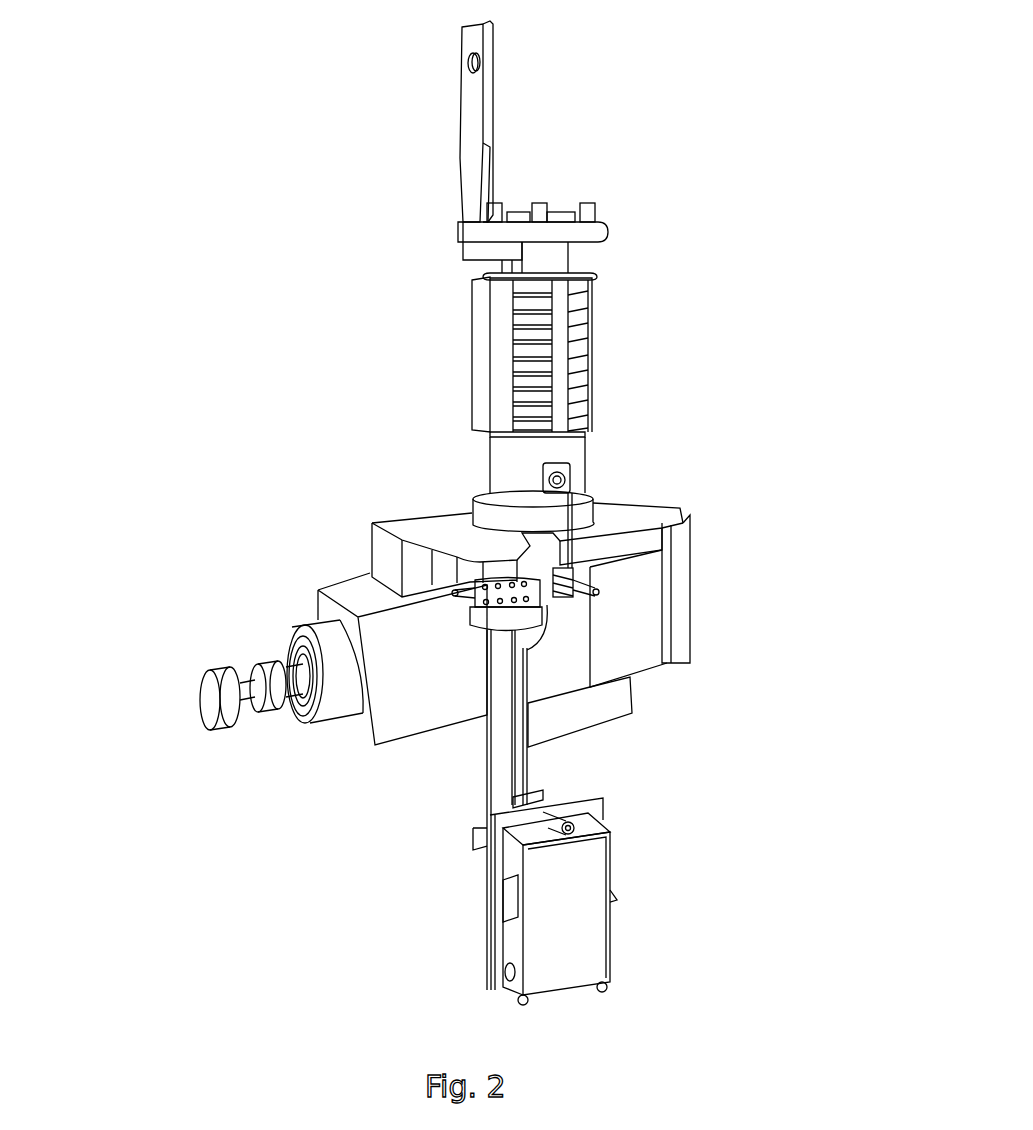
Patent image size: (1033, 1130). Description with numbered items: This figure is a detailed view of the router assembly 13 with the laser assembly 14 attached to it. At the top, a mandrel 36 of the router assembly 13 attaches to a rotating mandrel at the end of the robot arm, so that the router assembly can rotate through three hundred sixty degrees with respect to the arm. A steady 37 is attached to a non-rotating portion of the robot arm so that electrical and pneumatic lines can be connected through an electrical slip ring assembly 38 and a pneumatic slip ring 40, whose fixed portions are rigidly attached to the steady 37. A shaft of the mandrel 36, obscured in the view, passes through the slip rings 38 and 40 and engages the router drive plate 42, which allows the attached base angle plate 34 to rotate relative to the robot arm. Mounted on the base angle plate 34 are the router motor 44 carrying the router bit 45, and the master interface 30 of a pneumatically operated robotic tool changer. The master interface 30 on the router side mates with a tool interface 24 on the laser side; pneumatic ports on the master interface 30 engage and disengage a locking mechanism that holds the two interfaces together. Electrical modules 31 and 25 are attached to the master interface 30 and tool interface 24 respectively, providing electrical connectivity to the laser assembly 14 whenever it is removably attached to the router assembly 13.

The router assembly 13 is at (747, 382).
The laser assembly 14 is at (750, 850).
The tool interface 24 is at (487, 600).
The electrical module 25 is at (560, 598).
The master interface 30 is at (487, 585).
The electrical module 31 is at (575, 575).
The base angle plate 34 is at (442, 530).
The mandrel 36 is at (600, 233).
The steady 37 is at (466, 103).
The electrical slip ring assembly 38 is at (485, 352).
The pneumatic slip ring 40 is at (555, 258).
The router drive plate 42 is at (574, 495).
The router motor 44 is at (428, 717).
The router bit 45 is at (210, 700).